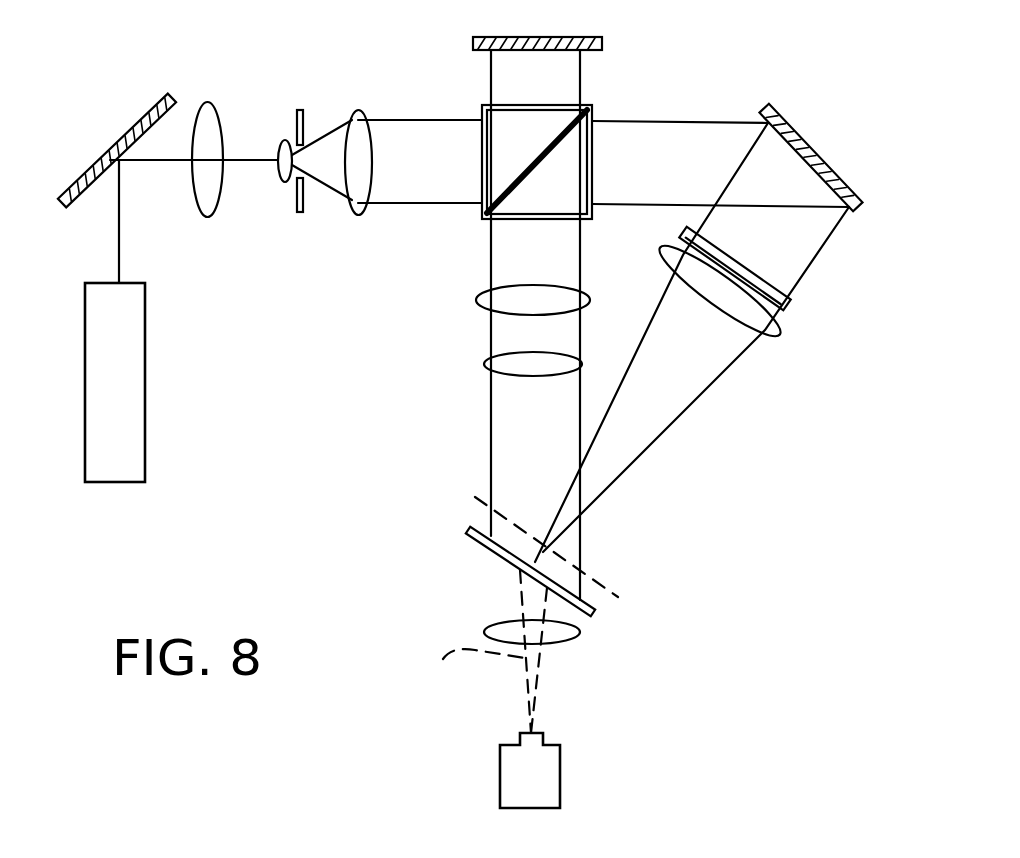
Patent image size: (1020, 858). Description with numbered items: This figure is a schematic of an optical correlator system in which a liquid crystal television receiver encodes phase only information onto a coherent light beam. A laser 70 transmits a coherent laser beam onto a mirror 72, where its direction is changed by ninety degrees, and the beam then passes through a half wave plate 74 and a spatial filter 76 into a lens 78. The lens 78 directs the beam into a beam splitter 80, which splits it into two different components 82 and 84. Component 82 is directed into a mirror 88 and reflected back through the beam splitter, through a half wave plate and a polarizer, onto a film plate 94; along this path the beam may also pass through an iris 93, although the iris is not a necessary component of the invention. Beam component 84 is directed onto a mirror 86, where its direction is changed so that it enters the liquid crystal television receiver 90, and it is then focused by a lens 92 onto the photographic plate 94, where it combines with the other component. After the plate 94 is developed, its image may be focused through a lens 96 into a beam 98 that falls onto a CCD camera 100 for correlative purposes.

The laser 70 is at (146, 407).
The mirror 72 is at (82, 176).
The half wave plate 74 is at (197, 200).
The spatial filter 76 is at (304, 124).
The lens 78 is at (357, 207).
The beam splitter 80 is at (560, 105).
The beam component 82 is at (580, 277).
The beam component 84 is at (694, 121).
The mirror 86 is at (797, 129).
The mirror 88 is at (553, 37).
The liquid crystal television receiver 90 is at (768, 292).
The lens 92 is at (760, 328).
The iris 93 is at (615, 590).
The film plate 94 is at (477, 543).
The lens 96 is at (557, 645).
The beam 98 is at (476, 672).
The CCD camera 100 is at (560, 772).